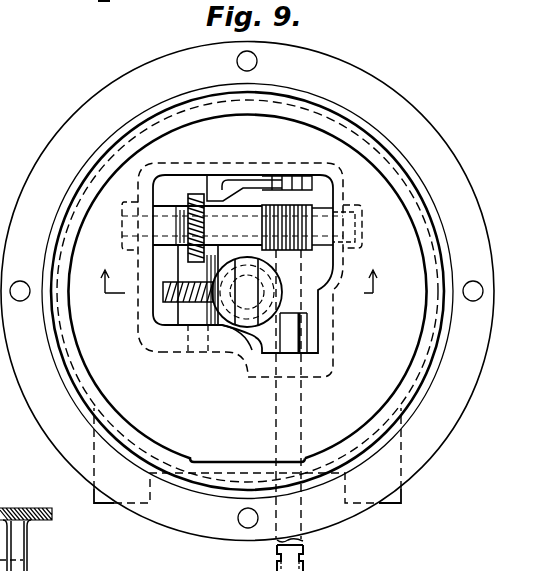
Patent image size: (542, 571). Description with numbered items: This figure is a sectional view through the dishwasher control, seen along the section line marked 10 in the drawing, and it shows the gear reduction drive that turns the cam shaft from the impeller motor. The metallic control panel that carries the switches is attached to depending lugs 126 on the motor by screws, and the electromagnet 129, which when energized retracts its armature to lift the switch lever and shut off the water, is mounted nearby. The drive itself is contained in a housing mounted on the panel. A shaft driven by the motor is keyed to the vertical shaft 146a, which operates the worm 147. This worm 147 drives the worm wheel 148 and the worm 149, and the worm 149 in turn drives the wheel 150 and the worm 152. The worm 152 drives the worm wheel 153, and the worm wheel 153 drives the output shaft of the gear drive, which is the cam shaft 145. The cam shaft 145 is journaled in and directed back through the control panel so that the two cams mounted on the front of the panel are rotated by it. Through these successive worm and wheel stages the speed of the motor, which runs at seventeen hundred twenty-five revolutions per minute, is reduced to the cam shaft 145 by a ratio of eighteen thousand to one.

The section line 10- 10 is at (236, 290).
The depending lugs 126 is at (93, 490).
The electromagnet 129 is at (4, 98).
The drive shaft 145 is at (303, 541).
The vertical shaft 146a is at (233, 326).
The worm 147 is at (243, 326).
The worm wheel 148 is at (189, 298).
The worm 149 is at (182, 250).
The wheel 150 is at (198, 200).
The worm 152 is at (309, 204).
The worm wheel 153 is at (322, 230).